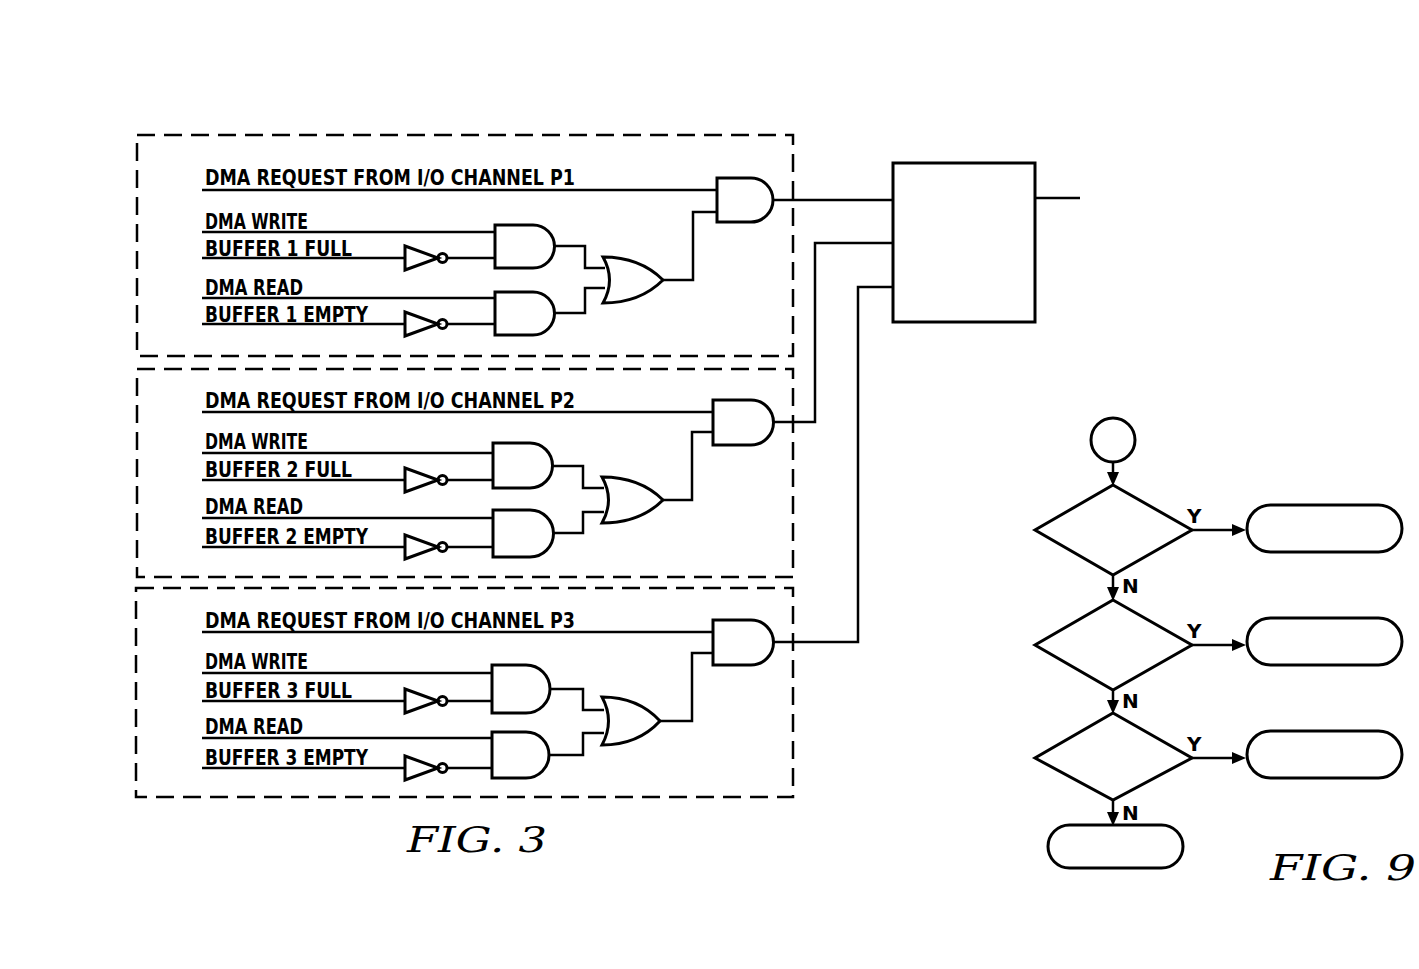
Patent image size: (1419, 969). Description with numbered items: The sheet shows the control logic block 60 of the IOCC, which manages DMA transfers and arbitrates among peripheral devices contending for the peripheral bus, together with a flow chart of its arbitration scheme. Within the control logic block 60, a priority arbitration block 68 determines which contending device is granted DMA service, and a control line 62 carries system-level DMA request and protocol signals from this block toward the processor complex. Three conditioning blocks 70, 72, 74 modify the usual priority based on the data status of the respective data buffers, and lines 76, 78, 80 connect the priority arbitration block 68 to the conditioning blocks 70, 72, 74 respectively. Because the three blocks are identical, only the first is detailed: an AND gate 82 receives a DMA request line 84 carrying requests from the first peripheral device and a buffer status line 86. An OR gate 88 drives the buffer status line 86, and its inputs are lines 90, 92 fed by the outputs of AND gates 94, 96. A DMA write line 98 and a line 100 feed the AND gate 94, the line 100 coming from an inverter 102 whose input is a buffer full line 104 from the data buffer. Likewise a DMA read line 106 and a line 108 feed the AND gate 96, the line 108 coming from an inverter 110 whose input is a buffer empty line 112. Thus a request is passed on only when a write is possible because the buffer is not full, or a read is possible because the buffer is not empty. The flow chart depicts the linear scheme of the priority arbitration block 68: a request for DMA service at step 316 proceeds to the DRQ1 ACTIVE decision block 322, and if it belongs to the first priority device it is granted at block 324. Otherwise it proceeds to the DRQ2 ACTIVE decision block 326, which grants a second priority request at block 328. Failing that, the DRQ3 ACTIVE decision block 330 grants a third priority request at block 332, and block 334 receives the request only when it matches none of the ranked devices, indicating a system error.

In FIG. 3, the control logic block 60 is at (494, 424).
In FIG. 3, the control line 62 is at (1057, 198).
In FIG. 3, the priority arbitration block 68 is at (1037, 255).
In FIG. 3, the conditioning block 70 is at (796, 233).
In FIG. 3, the conditioning block 72 is at (795, 470).
In FIG. 3, the conditioning block 74 is at (795, 691).
In FIG. 3, the line 76 is at (849, 199).
In FIG. 3, the line 78 is at (846, 243).
In FIG. 3, the line 80 is at (880, 288).
In FIG. 3, the AND gate 82 is at (738, 223).
In FIG. 3, the DMA request line 84 is at (653, 190).
In FIG. 3, the buffer status line 86 is at (692, 236).
In FIG. 3, the OR gate 88 is at (645, 300).
In FIG. 3, the line 90 is at (586, 250).
In FIG. 3, the line 92 is at (590, 306).
In FIG. 3, the AND gate 94 is at (517, 226).
In FIG. 3, the AND gate 96 is at (554, 322).
In FIG. 3, the DMA write line 98 is at (206, 232).
In FIG. 3, the line 100 is at (476, 246).
In FIG. 3, the inverter 102 is at (403, 268).
In FIG. 3, the buffer full line 104 is at (206, 258).
In FIG. 3, the DMA read line 106 is at (206, 298).
In FIG. 3, the line 108 is at (484, 310).
In FIG. 3, the inverter 110 is at (403, 333).
In FIG. 3, the buffer empty line 112 is at (272, 325).
In FIG. 9, the step 316 is at (1136, 440).
In FIG. 9, the DRQ1 ACTIVE decision block 322 is at (1078, 506).
In FIG. 9, the block 324 is at (1320, 505).
In FIG. 9, the DRQ2 ACTIVE decision block 326 is at (1078, 621).
In FIG. 9, the block 328 is at (1320, 618).
In FIG. 9, the DRQ3 ACTIVE decision block 330 is at (1078, 734).
In FIG. 9, the block 332 is at (1325, 779).
In FIG. 9, the block 334 is at (1048, 847).